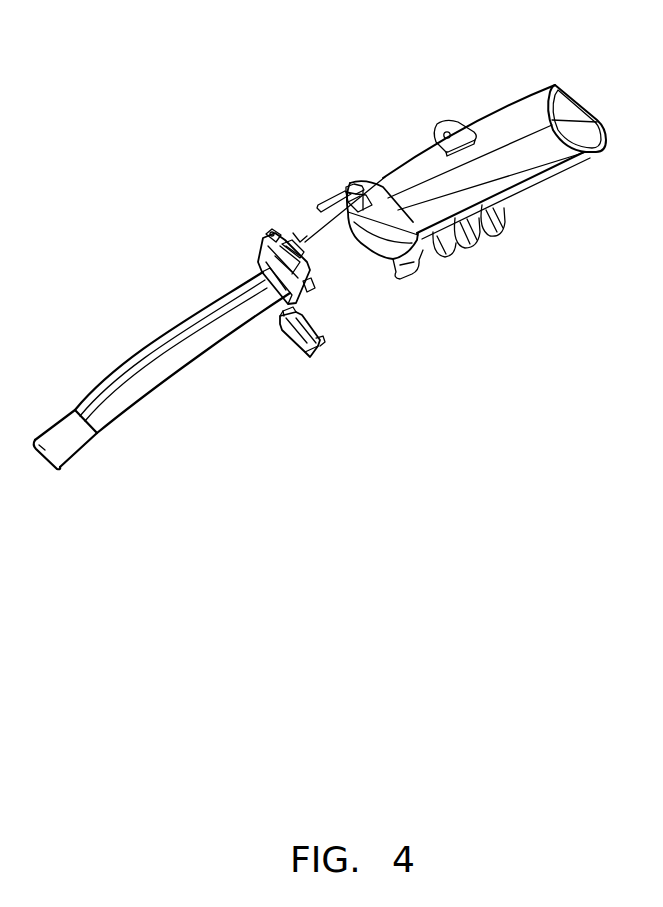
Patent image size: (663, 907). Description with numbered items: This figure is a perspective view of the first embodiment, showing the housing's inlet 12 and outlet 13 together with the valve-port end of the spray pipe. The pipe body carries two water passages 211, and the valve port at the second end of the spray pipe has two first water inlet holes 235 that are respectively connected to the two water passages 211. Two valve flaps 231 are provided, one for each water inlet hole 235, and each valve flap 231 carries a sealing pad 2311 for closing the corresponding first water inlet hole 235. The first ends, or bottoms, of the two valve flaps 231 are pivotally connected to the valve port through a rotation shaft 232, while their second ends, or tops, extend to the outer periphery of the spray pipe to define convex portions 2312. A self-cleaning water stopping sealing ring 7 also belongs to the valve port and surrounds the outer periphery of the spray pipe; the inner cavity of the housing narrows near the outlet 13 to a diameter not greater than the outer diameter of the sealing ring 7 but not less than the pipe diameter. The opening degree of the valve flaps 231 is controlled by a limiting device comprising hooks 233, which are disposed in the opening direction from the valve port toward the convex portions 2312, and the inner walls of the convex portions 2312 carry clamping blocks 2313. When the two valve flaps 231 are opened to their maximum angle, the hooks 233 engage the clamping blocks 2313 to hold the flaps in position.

The self-cleaning water stopping sealing ring 7 is at (258, 284).
The inlet 12 is at (477, 230).
The outlet 13 is at (385, 238).
The water passages 211 is at (300, 243).
The valve flaps 231 is at (186, 403).
The rotation shaft 232 is at (264, 274).
The hooks 233 is at (308, 291).
The first water inlet holes 235 is at (281, 247).
The sealing pad 2311 is at (276, 313).
The convex portions 2312 is at (320, 343).
The clamping blocks 2313 is at (300, 241).